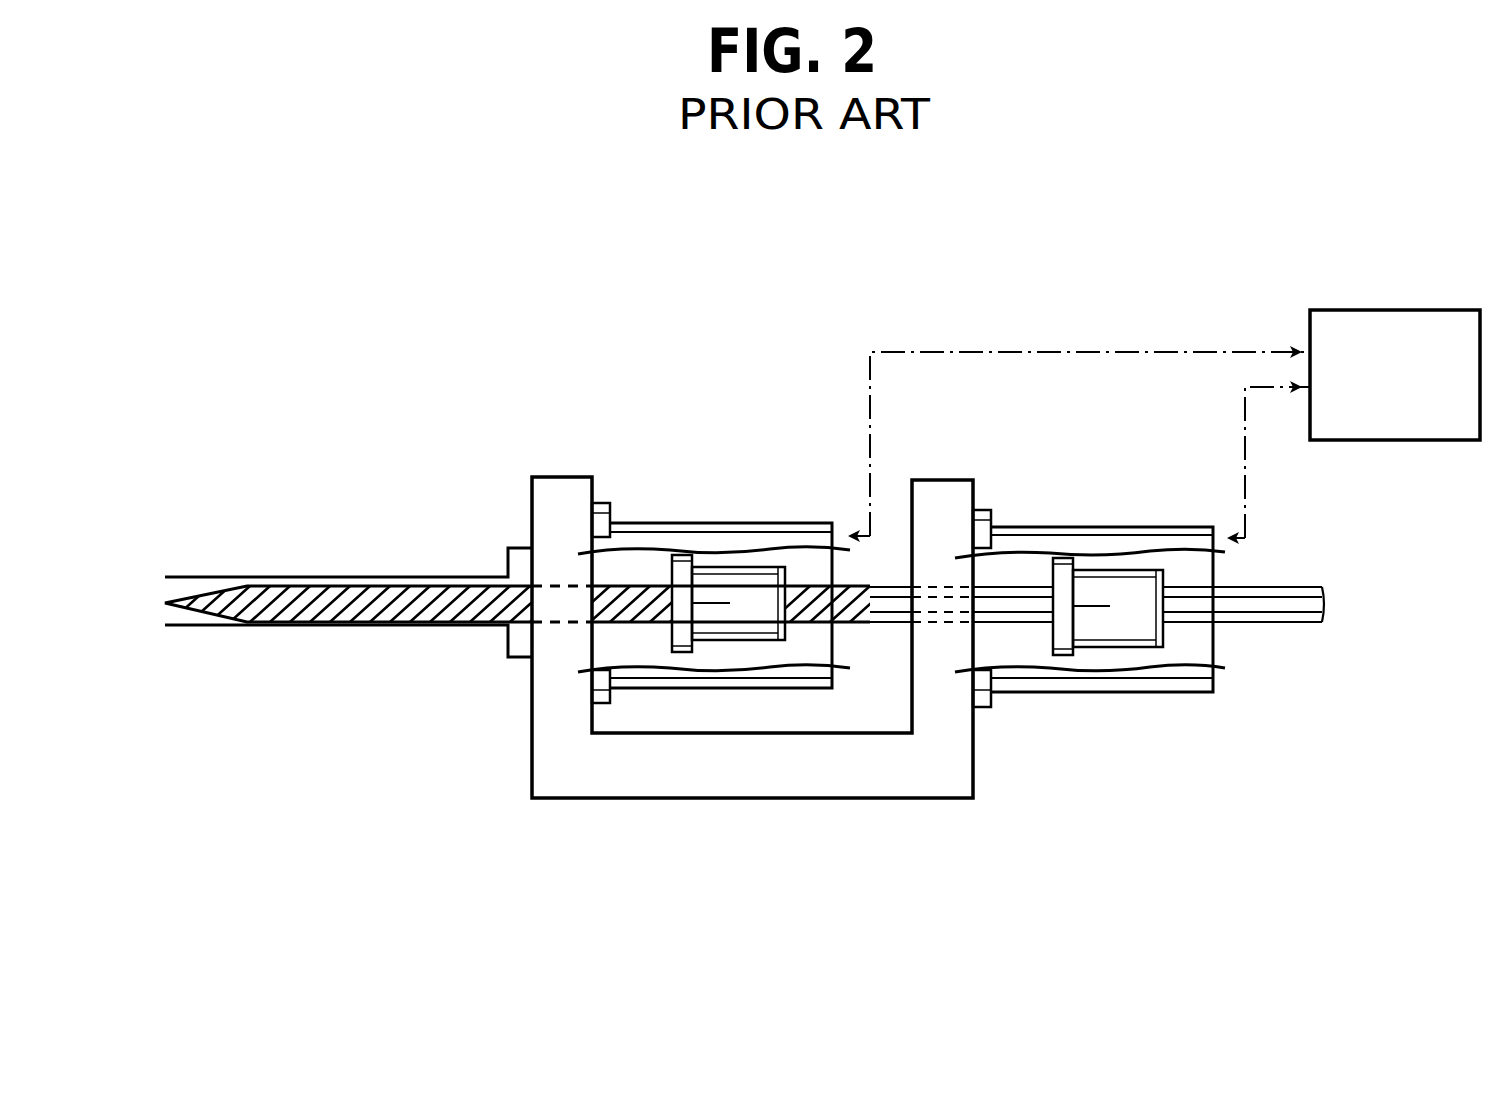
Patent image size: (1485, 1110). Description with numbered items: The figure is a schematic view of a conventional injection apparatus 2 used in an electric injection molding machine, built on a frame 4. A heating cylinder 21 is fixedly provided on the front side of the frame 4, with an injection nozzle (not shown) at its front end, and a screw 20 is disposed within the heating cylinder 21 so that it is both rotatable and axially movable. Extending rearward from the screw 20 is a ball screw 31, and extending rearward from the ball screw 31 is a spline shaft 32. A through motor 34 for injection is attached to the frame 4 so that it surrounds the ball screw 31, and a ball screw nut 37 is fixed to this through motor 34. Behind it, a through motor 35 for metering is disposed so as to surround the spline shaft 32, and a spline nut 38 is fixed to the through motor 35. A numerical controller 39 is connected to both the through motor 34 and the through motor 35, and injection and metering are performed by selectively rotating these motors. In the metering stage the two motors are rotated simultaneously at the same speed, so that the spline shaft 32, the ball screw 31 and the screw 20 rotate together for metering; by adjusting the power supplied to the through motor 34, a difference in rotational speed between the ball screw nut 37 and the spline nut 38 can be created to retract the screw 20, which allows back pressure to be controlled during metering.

The injection apparatus 2 is at (735, 420).
The frame 4 is at (906, 800).
The screw 20 is at (300, 585).
The heating cylinder 21 is at (215, 628).
The ball screw 31 is at (645, 582).
The spline shaft 32 is at (1278, 625).
The through motor for injection 34 is at (749, 700).
The through motor for metering 35 is at (1154, 700).
The ball screw nut 37 is at (710, 628).
The spline nut 38 is at (1100, 630).
The numerical controller 39 is at (1368, 310).